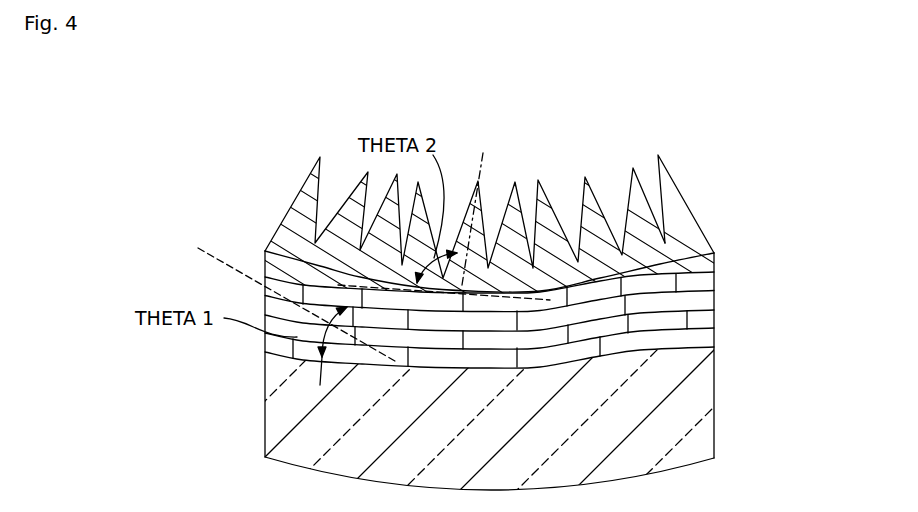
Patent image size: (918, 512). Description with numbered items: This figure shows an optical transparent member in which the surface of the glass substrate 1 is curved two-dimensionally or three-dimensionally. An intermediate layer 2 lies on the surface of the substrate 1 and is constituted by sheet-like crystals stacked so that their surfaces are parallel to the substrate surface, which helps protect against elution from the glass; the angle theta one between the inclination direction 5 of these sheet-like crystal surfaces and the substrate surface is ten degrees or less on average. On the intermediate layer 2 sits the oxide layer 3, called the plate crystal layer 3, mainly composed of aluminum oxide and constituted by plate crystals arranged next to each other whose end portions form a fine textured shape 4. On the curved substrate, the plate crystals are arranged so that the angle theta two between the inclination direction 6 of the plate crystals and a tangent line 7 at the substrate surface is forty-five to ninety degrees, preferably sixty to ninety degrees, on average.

The substrate 1 is at (698, 395).
The intermediate layer 2 is at (705, 310).
The oxide layer (plate crystal layer) 3 is at (712, 238).
The fine textured shape 4 is at (669, 189).
The inclination direction of the surface of the sheet-like crystals 5 is at (208, 258).
The inclination direction of the plate crystals 6 is at (481, 158).
The tangent line at the substrate surface 7 is at (503, 300).